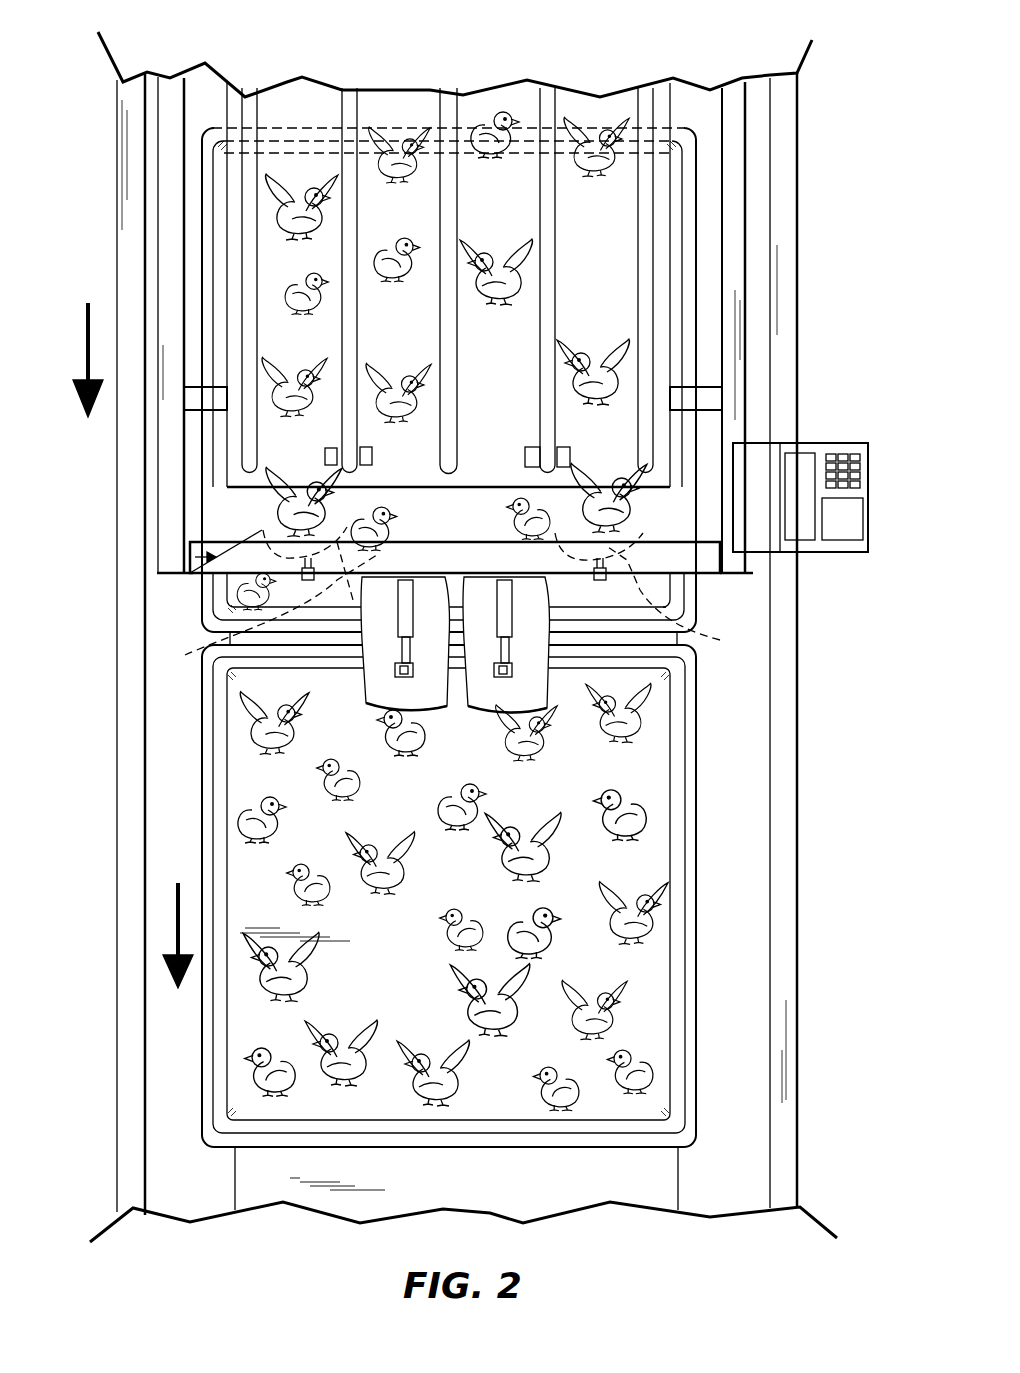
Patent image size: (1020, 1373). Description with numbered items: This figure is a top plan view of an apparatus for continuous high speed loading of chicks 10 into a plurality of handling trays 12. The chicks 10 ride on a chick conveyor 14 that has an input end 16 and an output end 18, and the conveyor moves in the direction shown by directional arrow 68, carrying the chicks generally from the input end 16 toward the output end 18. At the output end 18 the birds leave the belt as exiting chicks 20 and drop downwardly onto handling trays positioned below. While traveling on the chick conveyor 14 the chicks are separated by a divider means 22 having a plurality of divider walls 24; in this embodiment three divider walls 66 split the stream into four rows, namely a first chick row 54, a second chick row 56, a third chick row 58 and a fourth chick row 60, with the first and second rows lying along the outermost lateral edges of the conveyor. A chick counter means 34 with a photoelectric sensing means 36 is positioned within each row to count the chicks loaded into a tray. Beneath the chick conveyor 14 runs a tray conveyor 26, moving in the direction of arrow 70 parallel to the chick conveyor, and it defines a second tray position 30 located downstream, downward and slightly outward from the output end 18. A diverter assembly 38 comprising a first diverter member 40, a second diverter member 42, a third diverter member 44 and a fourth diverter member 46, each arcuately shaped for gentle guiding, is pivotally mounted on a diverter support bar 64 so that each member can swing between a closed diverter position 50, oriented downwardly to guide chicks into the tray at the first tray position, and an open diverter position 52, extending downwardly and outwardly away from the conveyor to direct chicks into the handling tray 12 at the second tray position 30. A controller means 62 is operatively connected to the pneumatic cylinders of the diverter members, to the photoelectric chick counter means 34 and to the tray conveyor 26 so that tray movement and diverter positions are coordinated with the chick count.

The chicks 10 is at (593, 123).
The handling trays 12 is at (466, 530).
The chick conveyor 14 is at (591, 297).
The input end 16 is at (287, 90).
The output end 18 is at (262, 520).
The exiting chicks 20 is at (263, 535).
The divider means 22 is at (547, 217).
The divider walls 24 is at (250, 348).
The tray conveyor 26 is at (464, 1203).
The second tray position 30 is at (697, 950).
The chick counter means 34 is at (335, 448).
The photoelectric sensing means 36 is at (373, 457).
The diverter assembly 38 is at (190, 560).
The first diverter member 40 is at (225, 578).
The second diverter member 42 is at (667, 593).
The third diverter member 44 is at (537, 693).
The fourth diverter member 46 is at (373, 687).
The closed diverter position 50 is at (373, 663).
The open diverter position 52 is at (454, 598).
The first chick row 54 is at (290, 232).
The second chick row 56 is at (597, 347).
The third chick row 58 is at (482, 153).
The fourth chick row 60 is at (405, 233).
The controller means 62 is at (771, 505).
The diverter support bar 64 is at (700, 580).
The divider walls 66 is at (547, 317).
The directional arrow 68 is at (83, 343).
The arrow 70 is at (172, 922).